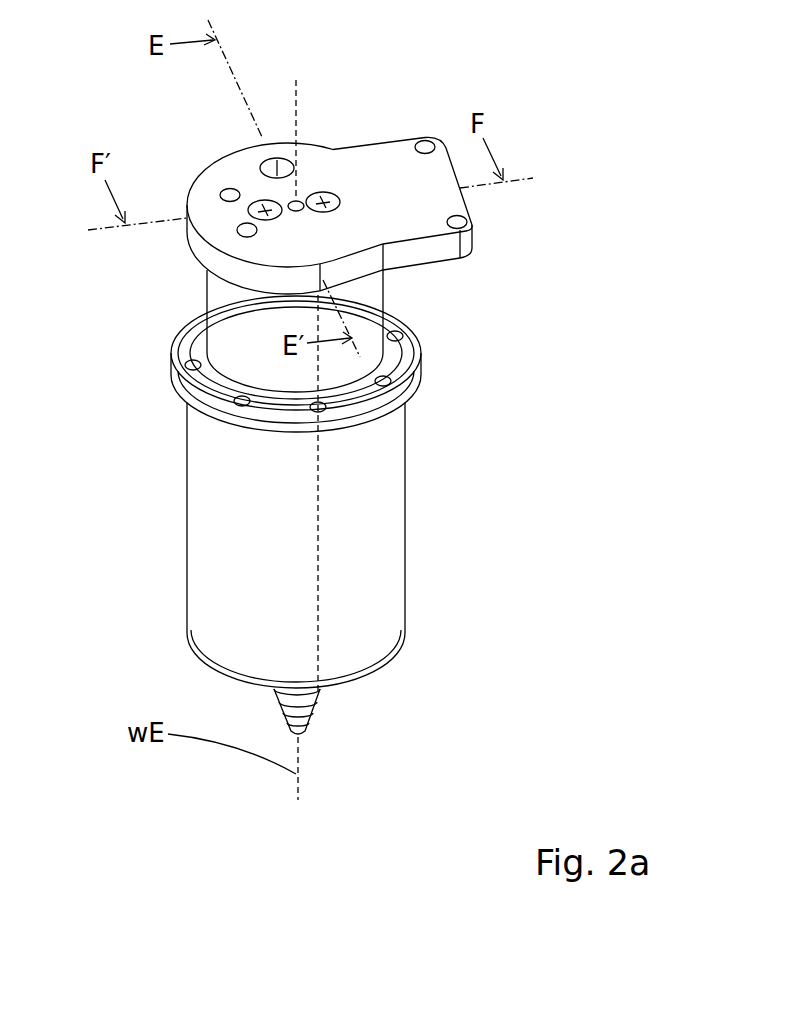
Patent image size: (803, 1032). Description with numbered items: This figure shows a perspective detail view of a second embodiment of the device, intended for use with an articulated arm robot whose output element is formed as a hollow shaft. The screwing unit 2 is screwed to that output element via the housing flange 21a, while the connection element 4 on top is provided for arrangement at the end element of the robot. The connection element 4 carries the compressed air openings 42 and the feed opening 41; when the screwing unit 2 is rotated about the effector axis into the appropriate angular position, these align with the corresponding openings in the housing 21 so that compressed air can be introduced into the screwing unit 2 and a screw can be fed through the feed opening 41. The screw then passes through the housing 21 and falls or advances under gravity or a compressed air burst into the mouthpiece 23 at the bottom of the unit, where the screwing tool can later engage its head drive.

The connection element 4 is at (475, 239).
The feed opening 41 is at (277, 168).
The compressed air openings 42 is at (291, 203).
The screwing unit 2 is at (259, 502).
The housing 21 is at (193, 503).
The housing flange 21a is at (183, 356).
The mouthpiece 23 is at (274, 709).